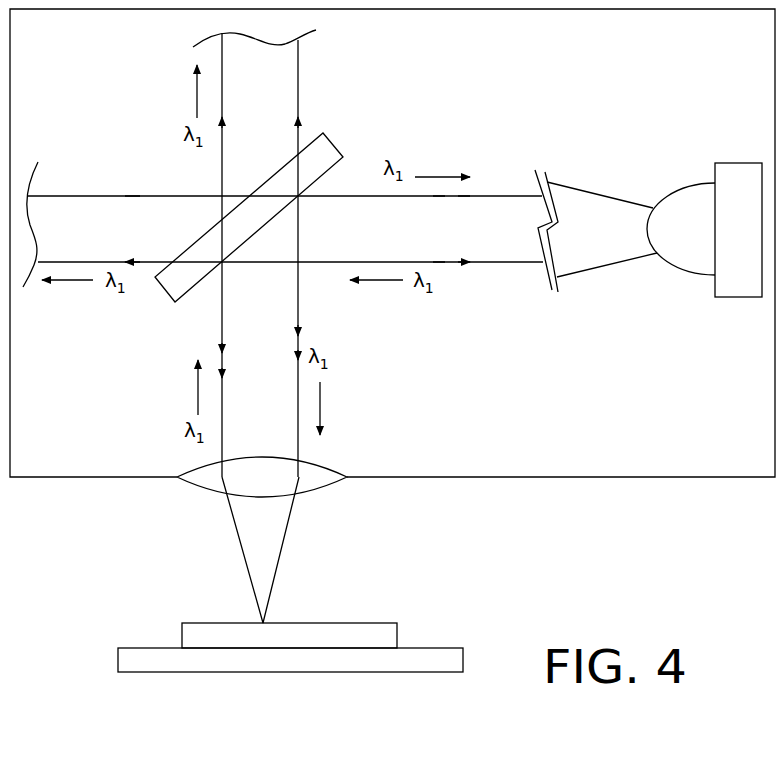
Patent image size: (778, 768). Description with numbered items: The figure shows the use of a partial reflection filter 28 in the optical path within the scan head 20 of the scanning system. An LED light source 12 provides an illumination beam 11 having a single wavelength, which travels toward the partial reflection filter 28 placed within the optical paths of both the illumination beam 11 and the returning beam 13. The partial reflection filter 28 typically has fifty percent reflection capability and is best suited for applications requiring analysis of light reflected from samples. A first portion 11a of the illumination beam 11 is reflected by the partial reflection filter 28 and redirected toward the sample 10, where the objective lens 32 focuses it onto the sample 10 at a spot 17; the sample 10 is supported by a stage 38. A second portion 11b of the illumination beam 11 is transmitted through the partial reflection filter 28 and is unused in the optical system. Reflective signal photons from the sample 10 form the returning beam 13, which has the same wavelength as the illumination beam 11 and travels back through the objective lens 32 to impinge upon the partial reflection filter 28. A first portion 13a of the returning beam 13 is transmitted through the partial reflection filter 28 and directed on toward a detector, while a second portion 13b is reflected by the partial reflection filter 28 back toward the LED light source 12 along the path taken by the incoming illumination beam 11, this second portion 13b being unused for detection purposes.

The scan head 20 is at (57, 479).
The returning beam 13 is at (222, 316).
The first portion of returning beam 13a is at (298, 91).
The first portion of illumination beam 11a is at (300, 298).
The second portion of illumination beam 11b is at (92, 196).
The partial reflection filter 28 is at (345, 157).
The second portion of returning beam 13b is at (520, 193).
The LED light source 12 is at (693, 190).
The illumination beam 11 is at (503, 263).
The objective lens 32 is at (330, 463).
The sample 10 is at (370, 622).
The spot 17 is at (248, 612).
The stage 38 is at (118, 660).